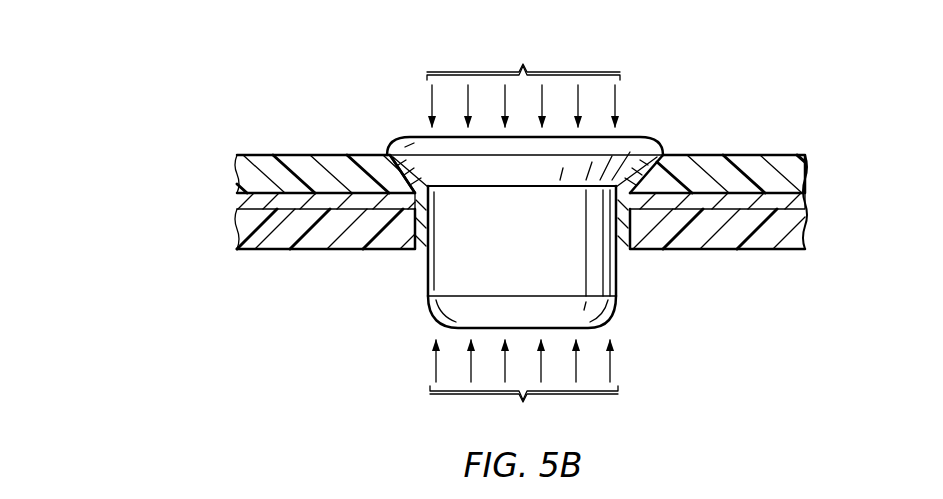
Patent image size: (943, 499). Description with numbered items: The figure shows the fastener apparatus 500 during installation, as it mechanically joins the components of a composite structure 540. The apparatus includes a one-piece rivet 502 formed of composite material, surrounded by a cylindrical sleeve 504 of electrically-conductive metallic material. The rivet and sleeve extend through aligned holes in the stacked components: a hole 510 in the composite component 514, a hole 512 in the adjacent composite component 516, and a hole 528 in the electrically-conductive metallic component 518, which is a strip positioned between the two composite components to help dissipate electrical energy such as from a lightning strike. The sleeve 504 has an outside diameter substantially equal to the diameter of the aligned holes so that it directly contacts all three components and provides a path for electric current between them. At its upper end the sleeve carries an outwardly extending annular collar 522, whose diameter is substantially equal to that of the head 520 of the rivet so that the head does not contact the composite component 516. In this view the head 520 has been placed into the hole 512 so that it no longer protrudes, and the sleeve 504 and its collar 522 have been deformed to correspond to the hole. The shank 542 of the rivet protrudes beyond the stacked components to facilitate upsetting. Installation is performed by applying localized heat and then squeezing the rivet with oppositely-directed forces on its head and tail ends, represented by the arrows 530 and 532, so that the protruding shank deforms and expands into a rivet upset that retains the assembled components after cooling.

The fastener apparatus 500 is at (684, 78).
The rivet 502 is at (617, 305).
The sleeve 504 is at (624, 232).
The hole 510 is at (420, 236).
The hole 512 is at (380, 153).
The composite component 514 is at (808, 233).
The composite component 516 is at (808, 168).
The electrically-conductive metallic component 518 is at (806, 203).
The head 520 is at (630, 145).
The annular collar 522 is at (640, 172).
The hole 528 is at (650, 190).
The arrow 530 is at (523, 82).
The arrow 532 is at (524, 386).
The composite structure 540 is at (360, 78).
The shank 542 is at (437, 280).